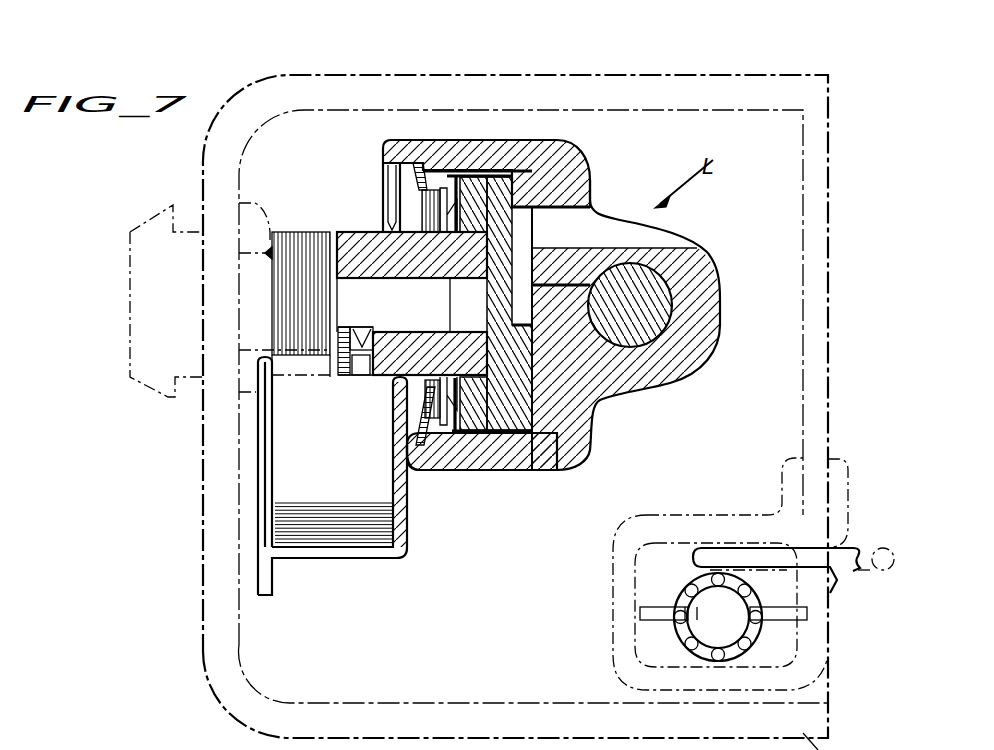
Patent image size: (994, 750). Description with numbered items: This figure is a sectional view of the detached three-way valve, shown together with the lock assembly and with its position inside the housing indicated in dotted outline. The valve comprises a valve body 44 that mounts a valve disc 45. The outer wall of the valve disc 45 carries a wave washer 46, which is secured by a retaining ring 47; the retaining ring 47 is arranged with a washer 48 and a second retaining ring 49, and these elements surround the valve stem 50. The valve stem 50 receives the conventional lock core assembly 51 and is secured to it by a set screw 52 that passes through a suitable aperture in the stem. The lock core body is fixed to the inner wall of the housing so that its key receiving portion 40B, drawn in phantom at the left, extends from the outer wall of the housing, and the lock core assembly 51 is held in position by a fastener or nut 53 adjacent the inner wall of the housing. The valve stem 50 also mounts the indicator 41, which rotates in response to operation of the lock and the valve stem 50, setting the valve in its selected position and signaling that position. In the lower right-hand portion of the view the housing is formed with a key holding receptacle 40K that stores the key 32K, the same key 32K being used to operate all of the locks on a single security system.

The key receiving portion 40B is at (160, 370).
The key holding receptacle 40K is at (800, 650).
The key 32K is at (705, 622).
The indicator 41 is at (395, 552).
The valve body 44 is at (690, 375).
The valve disc 45 is at (525, 185).
The wave washer 46 is at (457, 437).
The retaining ring 47 is at (455, 415).
The washer 48 is at (440, 185).
The second retaining ring 49 is at (405, 150).
The valve stem 50 is at (405, 378).
The lock core assembly 51 is at (318, 340).
The set screw 52 is at (357, 372).
The nut 53 is at (250, 215).